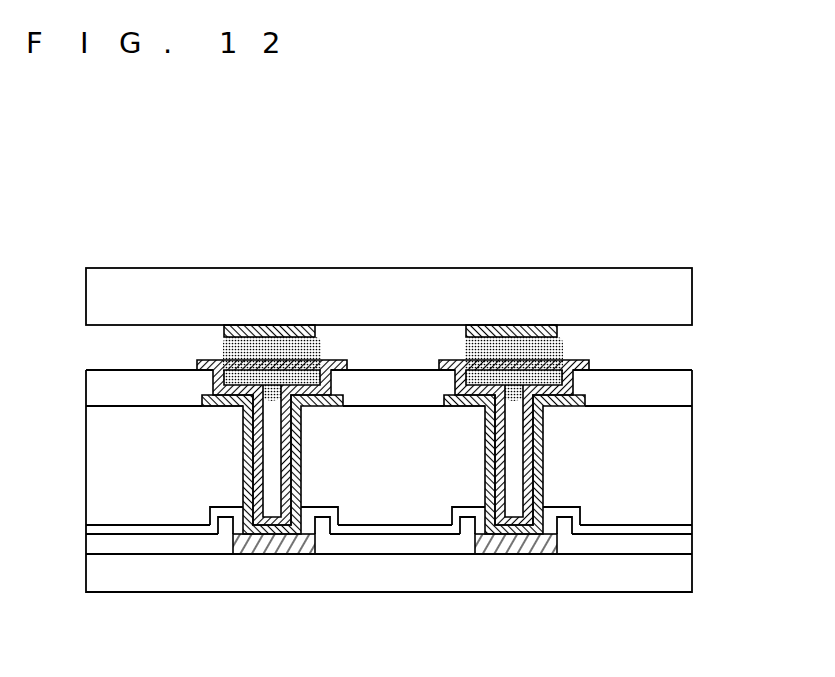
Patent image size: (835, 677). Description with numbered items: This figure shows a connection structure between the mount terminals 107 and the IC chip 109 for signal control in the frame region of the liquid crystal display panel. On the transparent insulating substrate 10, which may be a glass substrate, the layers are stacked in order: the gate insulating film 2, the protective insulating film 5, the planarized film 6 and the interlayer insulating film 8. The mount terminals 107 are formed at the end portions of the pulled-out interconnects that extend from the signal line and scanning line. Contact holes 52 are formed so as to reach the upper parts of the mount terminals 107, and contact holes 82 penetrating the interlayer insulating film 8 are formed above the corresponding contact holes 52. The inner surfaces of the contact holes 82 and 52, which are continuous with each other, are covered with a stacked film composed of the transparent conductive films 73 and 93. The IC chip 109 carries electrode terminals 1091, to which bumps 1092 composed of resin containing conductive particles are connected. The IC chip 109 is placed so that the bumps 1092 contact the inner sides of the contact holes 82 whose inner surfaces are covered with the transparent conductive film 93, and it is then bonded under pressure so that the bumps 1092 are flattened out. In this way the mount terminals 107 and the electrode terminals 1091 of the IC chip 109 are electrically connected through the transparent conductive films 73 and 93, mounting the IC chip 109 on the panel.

The IC chip 109 is at (685, 292).
The electrode terminal 1091 is at (282, 326).
The bump 1092 is at (237, 352).
The transparent conductive film 93 is at (347, 367).
The contact hole 82 is at (332, 385).
The transparent conductive film 73 is at (213, 407).
The contact hole 52 is at (300, 523).
The mount terminal 107 is at (274, 534).
The interlayer insulating film 8 is at (686, 397).
The planarized film 6 is at (686, 459).
The protective insulating film 5 is at (686, 530).
The gate insulating film 2 is at (686, 545).
The transparent insulating substrate 10 is at (686, 577).